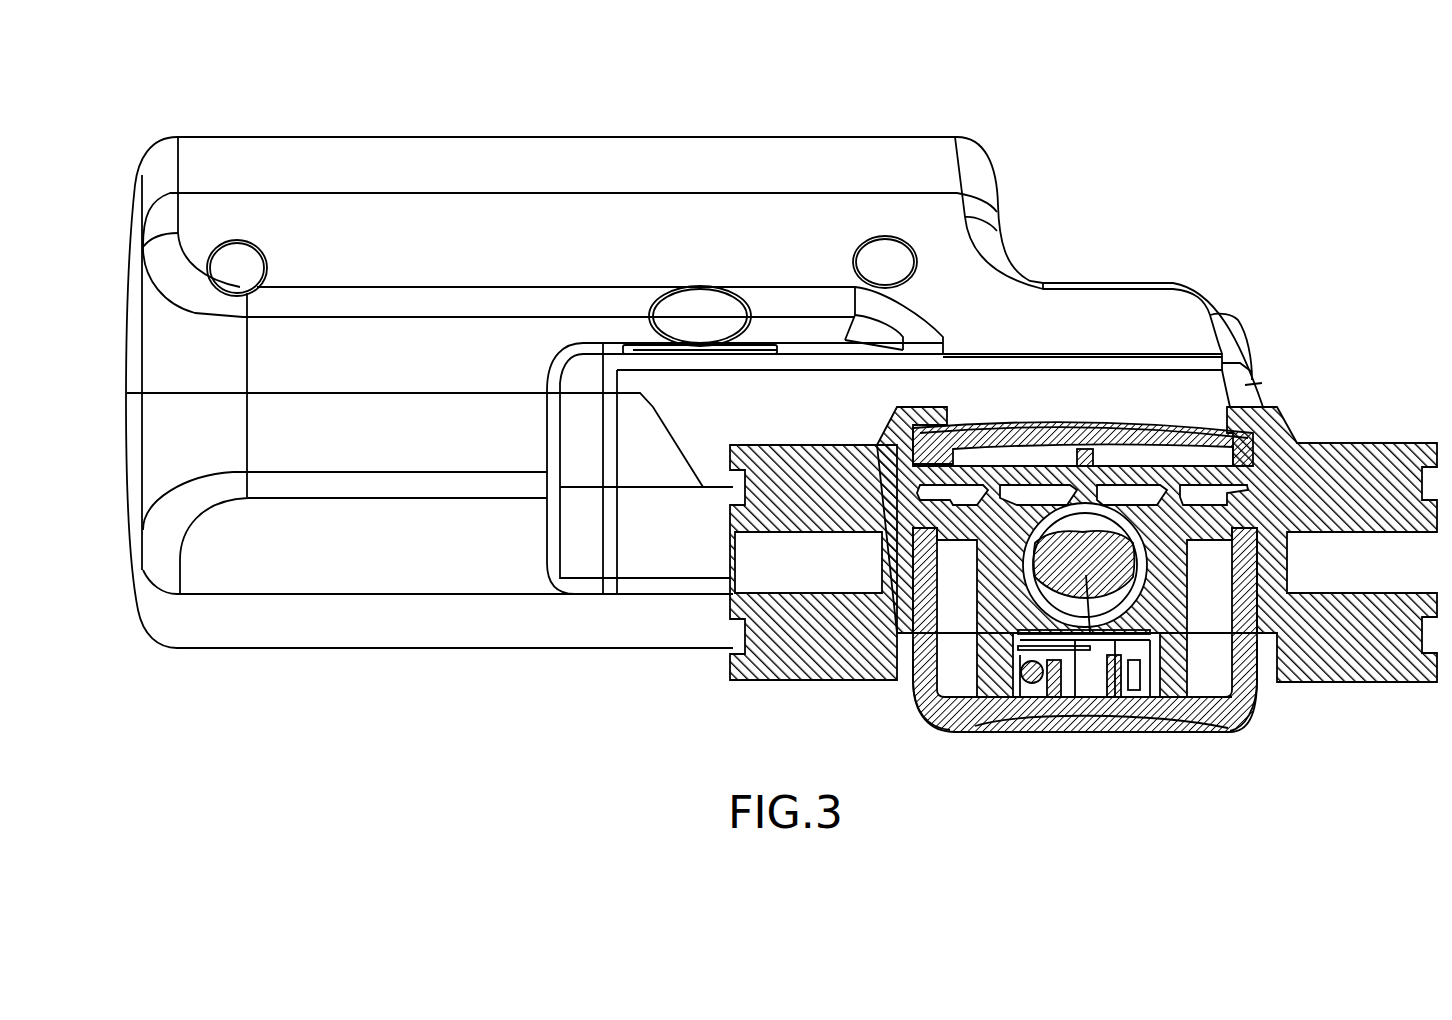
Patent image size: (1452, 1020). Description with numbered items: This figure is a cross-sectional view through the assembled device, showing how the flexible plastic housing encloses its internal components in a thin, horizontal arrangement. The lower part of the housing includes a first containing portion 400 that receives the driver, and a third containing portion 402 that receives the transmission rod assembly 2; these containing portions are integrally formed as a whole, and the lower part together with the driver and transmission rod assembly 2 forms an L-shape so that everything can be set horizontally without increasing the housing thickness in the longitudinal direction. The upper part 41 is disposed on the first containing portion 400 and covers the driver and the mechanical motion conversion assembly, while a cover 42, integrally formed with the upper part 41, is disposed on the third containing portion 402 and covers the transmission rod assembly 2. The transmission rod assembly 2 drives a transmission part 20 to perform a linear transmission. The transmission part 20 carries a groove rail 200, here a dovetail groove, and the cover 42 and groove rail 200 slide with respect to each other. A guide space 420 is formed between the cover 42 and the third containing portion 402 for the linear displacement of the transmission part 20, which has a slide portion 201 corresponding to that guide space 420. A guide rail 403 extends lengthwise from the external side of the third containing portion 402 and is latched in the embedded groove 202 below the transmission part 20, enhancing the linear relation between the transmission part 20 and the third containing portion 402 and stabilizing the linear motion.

The upper part 41 is at (415, 148).
The first containing portion 400 is at (358, 637).
The cover 42 is at (1103, 427).
The groove rail 200 is at (1111, 539).
The transmission part 20 is at (1355, 465).
The guide space 420 is at (1243, 500).
The embedded groove 202 is at (1247, 690).
The third containing portion 402 is at (1210, 737).
The slide portion 201 is at (923, 713).
The transmission rod assembly 2 is at (1127, 720).
The guide rail 403 is at (1200, 713).